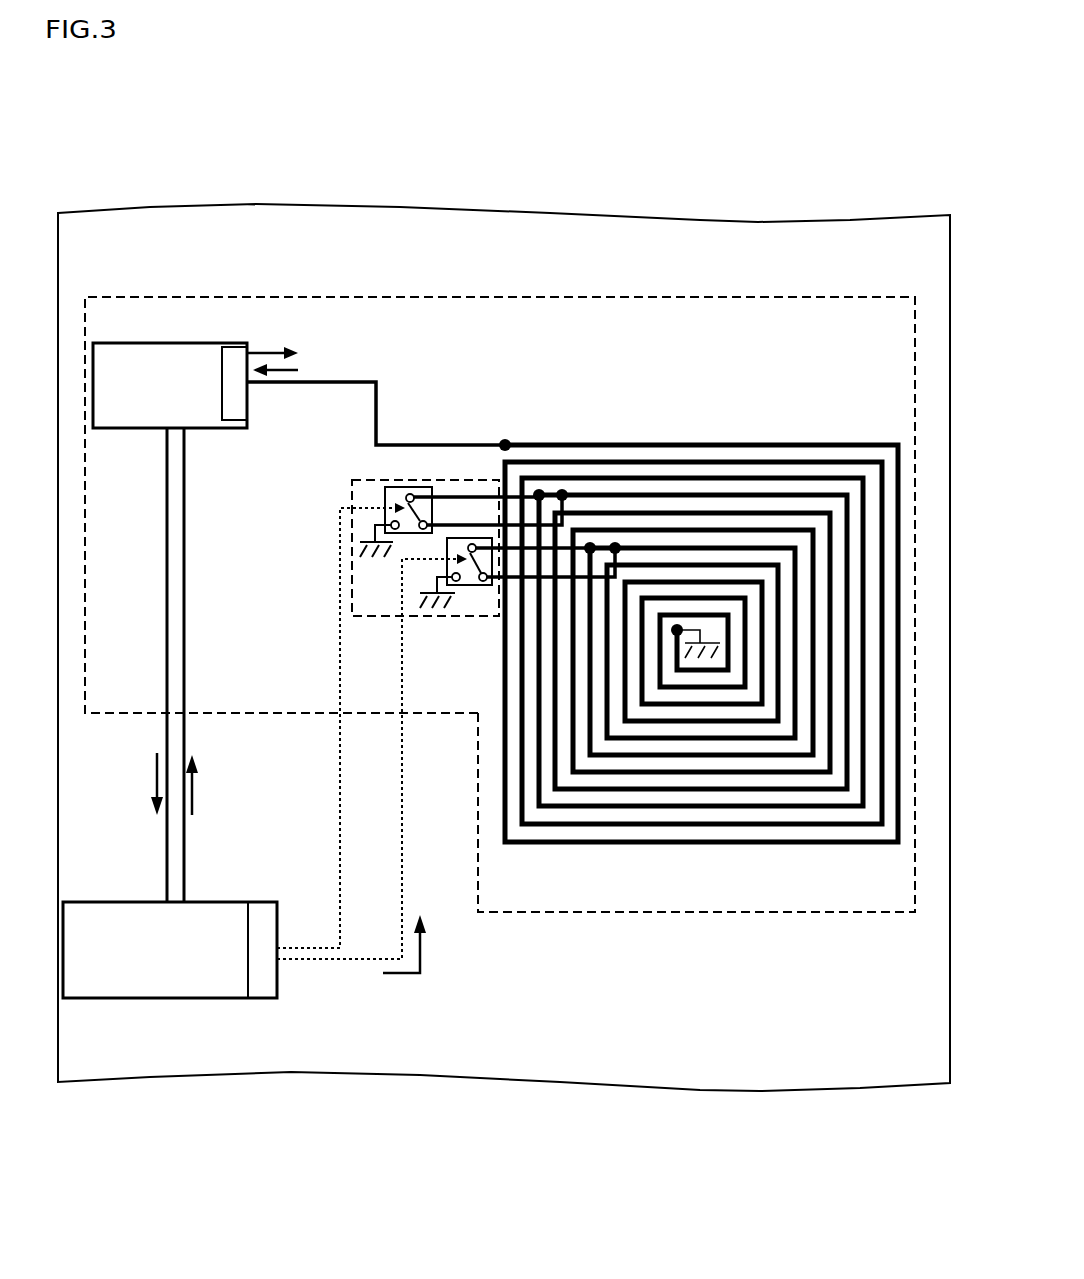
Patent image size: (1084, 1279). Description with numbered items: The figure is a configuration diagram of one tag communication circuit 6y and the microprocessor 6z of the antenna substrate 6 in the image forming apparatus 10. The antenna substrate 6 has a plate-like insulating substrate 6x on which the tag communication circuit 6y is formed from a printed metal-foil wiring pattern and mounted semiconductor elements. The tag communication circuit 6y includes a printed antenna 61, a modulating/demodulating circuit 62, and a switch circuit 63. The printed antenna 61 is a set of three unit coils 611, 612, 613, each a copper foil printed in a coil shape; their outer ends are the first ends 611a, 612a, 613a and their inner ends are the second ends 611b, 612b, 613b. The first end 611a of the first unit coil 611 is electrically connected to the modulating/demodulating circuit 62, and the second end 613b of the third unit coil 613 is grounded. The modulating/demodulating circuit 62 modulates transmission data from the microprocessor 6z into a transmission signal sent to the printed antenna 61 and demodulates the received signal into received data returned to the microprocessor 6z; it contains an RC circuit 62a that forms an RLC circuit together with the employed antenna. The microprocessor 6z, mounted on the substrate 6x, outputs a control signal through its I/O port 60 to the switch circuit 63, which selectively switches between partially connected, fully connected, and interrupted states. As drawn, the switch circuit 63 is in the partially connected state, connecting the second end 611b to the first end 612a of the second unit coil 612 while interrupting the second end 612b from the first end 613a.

The electronic component / RFID device 10 is at (122, 152).
The antenna substrate 6 is at (862, 215).
The substrate 6x is at (950, 1060).
The tag communication circuit 6y is at (803, 295).
The microprocessor 6z is at (135, 901).
The I/O port 60 is at (260, 1000).
The printed antenna 61 is at (741, 432).
The first unit coil 611 is at (720, 740).
The first end of the first unit coil 611a is at (505, 439).
The second end of the first unit coil 611b is at (540, 489).
The second unit coil 612 is at (670, 808).
The first end of the second unit coil 612a is at (566, 489).
The second end of the second unit coil 612b is at (592, 542).
The third unit coil 613 is at (597, 843).
The first end of the third unit coil 613a is at (618, 542).
The second end of the third unit coil 613b is at (672, 628).
The modulating/demodulating circuit 62 is at (188, 343).
The RC circuit 62a is at (222, 423).
The switch circuit 63 is at (350, 506).